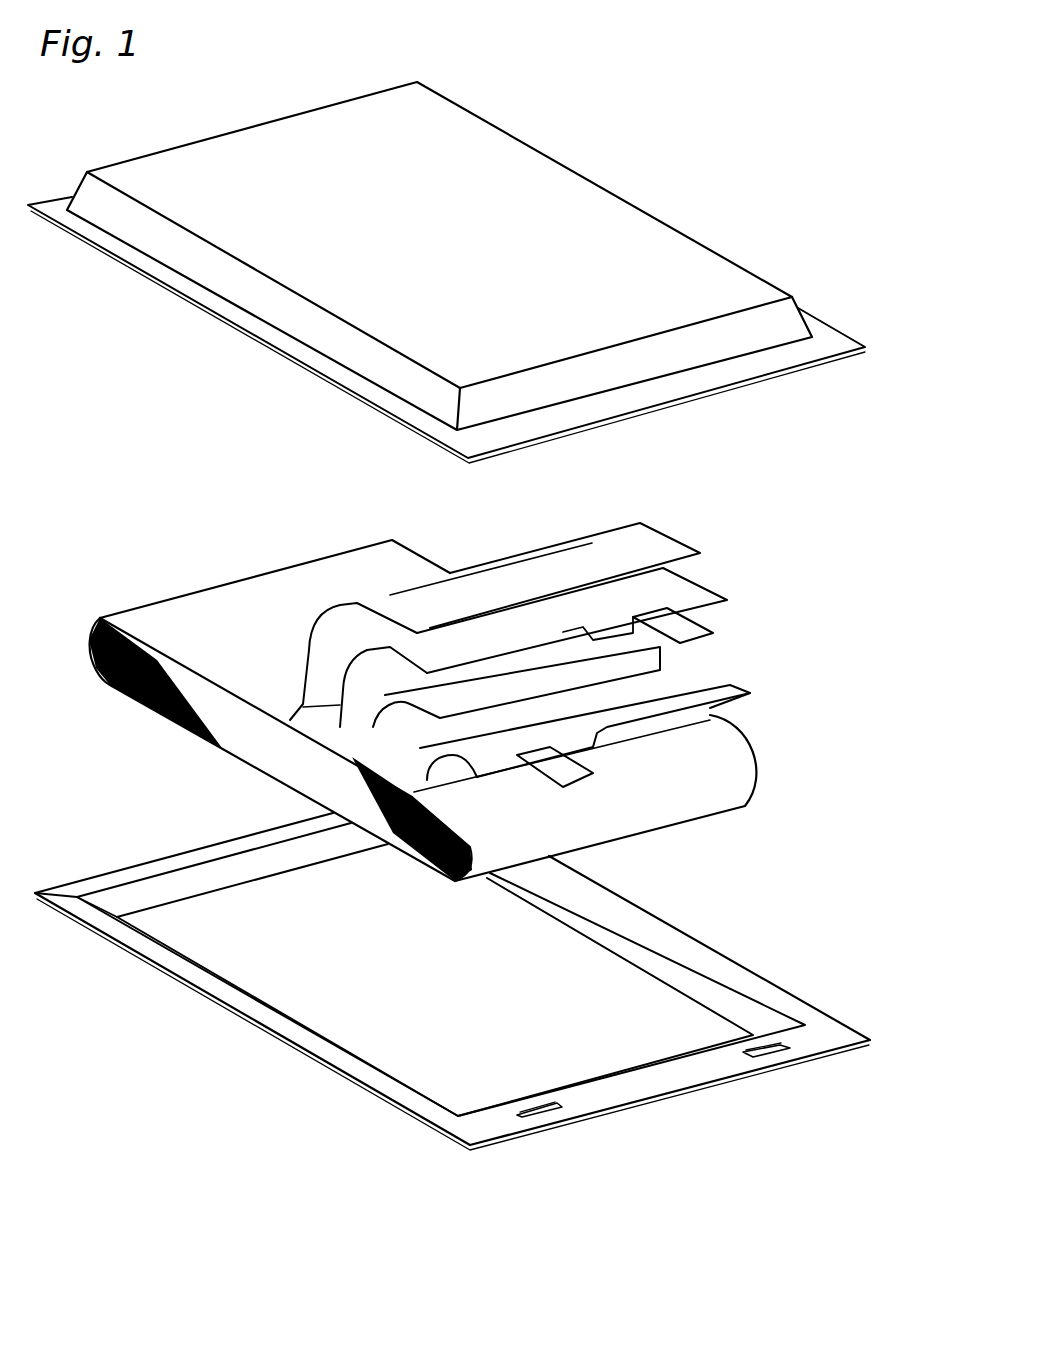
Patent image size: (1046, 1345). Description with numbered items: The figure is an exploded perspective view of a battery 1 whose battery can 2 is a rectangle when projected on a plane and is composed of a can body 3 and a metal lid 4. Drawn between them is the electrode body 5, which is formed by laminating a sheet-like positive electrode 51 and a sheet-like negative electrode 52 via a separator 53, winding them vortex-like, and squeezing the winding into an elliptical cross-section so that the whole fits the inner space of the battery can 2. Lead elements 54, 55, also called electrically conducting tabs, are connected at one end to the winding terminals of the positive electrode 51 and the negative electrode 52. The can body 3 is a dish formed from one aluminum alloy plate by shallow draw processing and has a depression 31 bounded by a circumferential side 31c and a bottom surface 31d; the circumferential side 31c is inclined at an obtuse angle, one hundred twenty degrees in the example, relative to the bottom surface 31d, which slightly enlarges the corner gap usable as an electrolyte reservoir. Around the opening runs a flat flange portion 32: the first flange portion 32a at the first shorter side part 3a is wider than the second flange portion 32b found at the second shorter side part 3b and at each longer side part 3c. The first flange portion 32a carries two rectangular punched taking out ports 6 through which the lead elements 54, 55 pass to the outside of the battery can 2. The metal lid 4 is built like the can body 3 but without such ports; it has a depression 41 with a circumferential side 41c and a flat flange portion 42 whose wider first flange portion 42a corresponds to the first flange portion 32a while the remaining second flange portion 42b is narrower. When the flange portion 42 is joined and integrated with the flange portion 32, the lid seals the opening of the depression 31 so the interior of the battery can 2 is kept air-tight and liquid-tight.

The battery 1 is at (756, 178).
The battery can 2 is at (858, 613).
The can body 3 is at (456, 951).
The first shorter side part 3a is at (617, 1113).
The second shorter side part 3b is at (115, 868).
The longer side part 3c is at (795, 992).
The metal lid 4 is at (446, 369).
The electrode body 5 is at (230, 574).
The taking out port 6 is at (537, 1108).
The depression 31 is at (350, 1025).
The circumferential side 31c is at (613, 930).
The bottom surface 31d is at (398, 1073).
The flange portion 32 is at (198, 998).
The first flange portion 32a is at (673, 1077).
The second flange portion 32b is at (235, 845).
The depression 41 is at (542, 184).
The circumferential side 41c is at (380, 367).
The flange portion 42 is at (270, 358).
The first flange portion 42a is at (673, 385).
The second flange portion 42b is at (170, 277).
The positive electrode 51 is at (727, 690).
The negative electrode 52 is at (653, 587).
The separator 53 is at (550, 677).
The lead element 54 is at (587, 767).
The lead element 55 is at (677, 628).